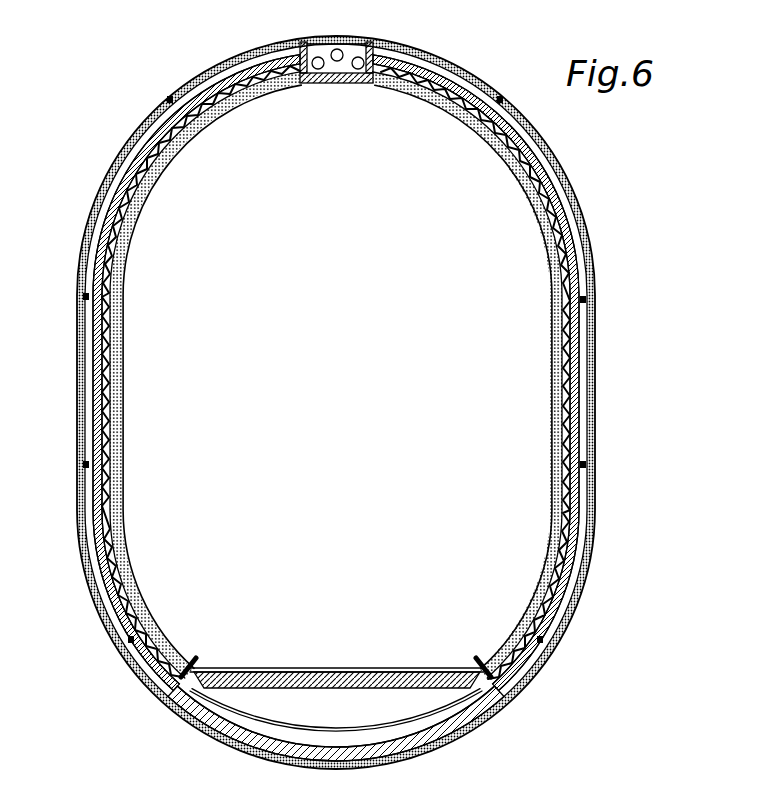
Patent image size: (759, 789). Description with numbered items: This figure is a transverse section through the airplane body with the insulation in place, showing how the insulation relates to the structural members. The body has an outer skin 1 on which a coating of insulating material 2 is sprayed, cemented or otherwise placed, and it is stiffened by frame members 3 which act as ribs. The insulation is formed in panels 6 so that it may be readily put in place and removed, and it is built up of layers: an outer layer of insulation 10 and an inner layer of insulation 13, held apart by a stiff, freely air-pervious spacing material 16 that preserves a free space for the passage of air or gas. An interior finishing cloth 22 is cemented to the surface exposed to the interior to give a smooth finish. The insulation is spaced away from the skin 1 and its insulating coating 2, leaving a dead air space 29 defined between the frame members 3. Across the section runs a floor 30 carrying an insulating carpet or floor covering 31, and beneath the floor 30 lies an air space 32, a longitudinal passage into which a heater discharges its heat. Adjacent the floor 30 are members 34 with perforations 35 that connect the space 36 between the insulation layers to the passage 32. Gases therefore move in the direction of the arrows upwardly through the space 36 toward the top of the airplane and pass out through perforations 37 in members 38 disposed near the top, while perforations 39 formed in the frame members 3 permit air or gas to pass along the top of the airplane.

The skin 1 is at (590, 239).
The insulating material 2 is at (591, 272).
The frame members 3 is at (330, 82).
The panels 6 is at (540, 482).
The outer layer of insulation 10 is at (574, 340).
The inner layer of insulation 13 is at (568, 376).
The spacing material 16 is at (566, 353).
The interior finishing cloth 22 is at (568, 421).
The dead air space 29 is at (590, 433).
The floor 30 is at (379, 667).
The floor covering 31 is at (272, 667).
The air space 32 is at (327, 705).
The members 34 is at (186, 694).
The perforations 35 is at (191, 668).
The space 36 is at (585, 482).
The perforations 37 is at (295, 84).
The members 38 is at (310, 43).
The perforations 39 is at (318, 69).